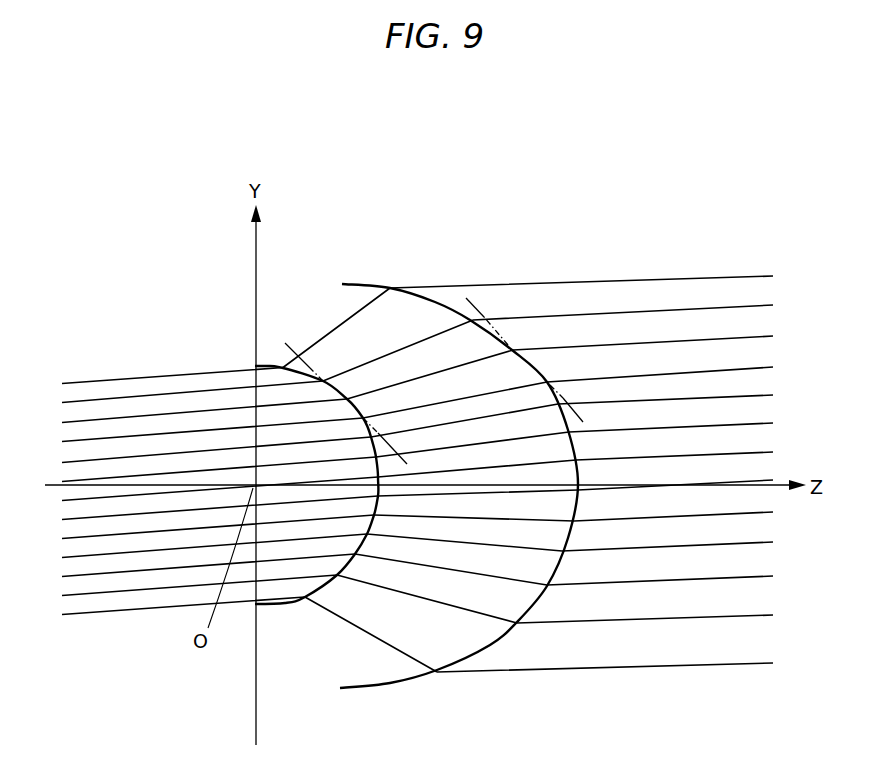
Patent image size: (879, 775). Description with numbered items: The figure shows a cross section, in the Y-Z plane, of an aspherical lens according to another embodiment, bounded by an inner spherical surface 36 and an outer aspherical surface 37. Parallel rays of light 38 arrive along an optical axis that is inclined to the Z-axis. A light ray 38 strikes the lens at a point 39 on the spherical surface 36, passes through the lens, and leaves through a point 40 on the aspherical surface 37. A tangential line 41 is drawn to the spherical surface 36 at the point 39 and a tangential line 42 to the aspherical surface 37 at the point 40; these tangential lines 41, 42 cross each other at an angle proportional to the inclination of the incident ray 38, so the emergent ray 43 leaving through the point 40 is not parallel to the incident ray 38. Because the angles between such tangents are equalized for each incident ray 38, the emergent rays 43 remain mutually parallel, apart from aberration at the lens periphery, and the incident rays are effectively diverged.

The inner spherical surface 36 is at (273, 606).
The outer aspherical surface 37 is at (392, 688).
The parallel rays of light 38 is at (188, 377).
The point 39 is at (348, 398).
The point 40 is at (512, 351).
The tangential line 41 is at (314, 363).
The tangential line 42 is at (486, 306).
The emergent ray 43 is at (612, 342).